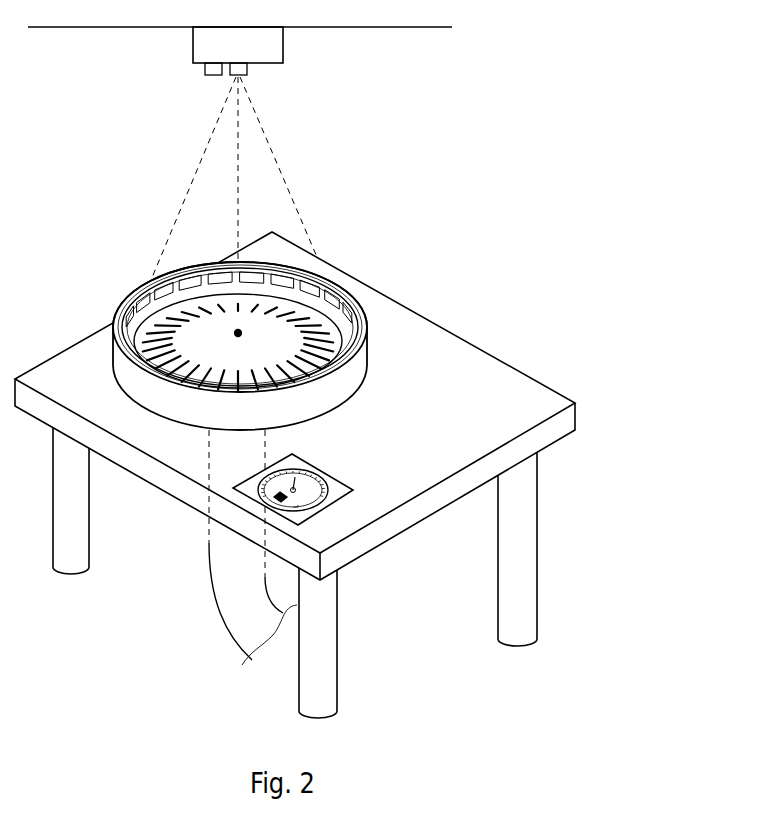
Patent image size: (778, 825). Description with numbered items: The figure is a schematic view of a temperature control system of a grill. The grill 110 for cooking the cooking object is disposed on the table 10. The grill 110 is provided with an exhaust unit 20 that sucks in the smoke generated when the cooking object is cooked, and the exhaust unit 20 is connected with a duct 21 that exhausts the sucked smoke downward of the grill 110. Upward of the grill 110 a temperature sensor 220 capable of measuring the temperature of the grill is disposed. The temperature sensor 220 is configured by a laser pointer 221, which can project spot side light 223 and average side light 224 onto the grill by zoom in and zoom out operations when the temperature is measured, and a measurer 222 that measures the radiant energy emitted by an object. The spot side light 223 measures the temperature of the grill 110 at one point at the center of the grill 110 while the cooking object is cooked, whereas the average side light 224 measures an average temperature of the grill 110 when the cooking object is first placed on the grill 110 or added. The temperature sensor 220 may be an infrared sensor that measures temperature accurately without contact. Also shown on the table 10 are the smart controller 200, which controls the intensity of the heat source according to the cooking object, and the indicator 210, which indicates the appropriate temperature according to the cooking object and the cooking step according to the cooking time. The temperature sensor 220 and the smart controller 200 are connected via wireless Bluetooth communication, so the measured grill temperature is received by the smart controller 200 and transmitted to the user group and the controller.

The table 10 is at (488, 367).
The exhaust unit 20 is at (238, 333).
The duct 21 is at (222, 593).
The grill 110 is at (150, 290).
The smart controller 200 is at (353, 492).
The indicator 210 is at (287, 499).
The temperature sensor 220 is at (284, 43).
The laser pointer 221 is at (249, 68).
The measurer 222 is at (203, 68).
The spot side light 223 is at (357, 318).
The average side light 224 is at (120, 318).